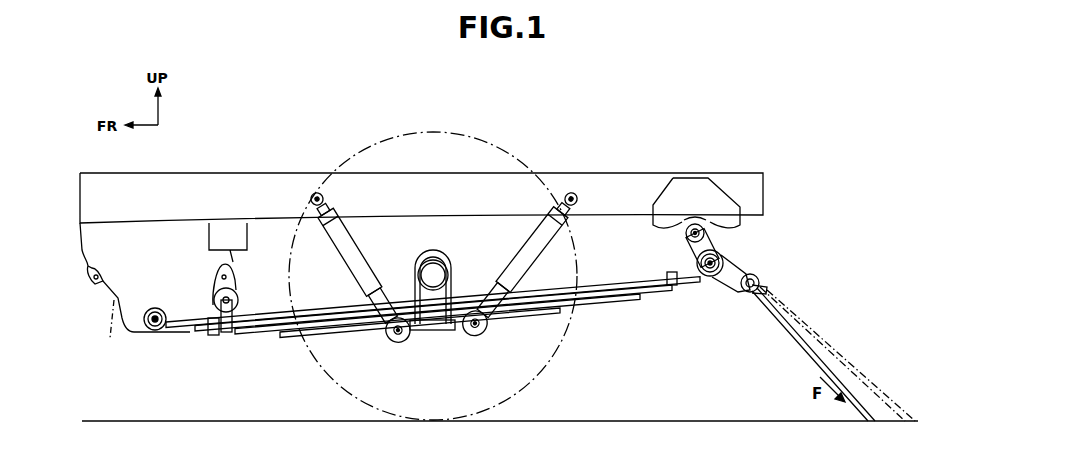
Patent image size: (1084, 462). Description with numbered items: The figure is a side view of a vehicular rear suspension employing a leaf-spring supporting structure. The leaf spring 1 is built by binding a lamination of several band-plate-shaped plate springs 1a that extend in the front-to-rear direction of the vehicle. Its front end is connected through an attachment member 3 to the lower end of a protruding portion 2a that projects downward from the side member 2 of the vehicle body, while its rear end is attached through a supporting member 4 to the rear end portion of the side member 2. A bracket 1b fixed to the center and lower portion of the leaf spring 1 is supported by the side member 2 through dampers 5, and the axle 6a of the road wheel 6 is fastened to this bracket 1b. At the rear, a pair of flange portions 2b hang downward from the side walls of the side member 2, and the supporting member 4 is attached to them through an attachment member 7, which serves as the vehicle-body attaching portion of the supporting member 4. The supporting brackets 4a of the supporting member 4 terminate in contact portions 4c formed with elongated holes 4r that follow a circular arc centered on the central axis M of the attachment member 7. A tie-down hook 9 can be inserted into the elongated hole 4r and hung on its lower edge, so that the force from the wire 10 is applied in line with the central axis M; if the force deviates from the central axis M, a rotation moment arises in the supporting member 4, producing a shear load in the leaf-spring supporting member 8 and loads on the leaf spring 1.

The leaf spring 1 is at (623, 301).
The plate springs 1a is at (275, 329).
The bracket 1b is at (440, 331).
The side member 2 is at (613, 173).
The protruding portion 2a is at (118, 297).
The flange portions 2b is at (681, 232).
The attachment member 3 is at (150, 332).
The supporting member 4 is at (755, 278).
The supporting brackets 4a is at (726, 288).
The elongated holes 4r is at (751, 275).
The contact portions 4c is at (760, 273).
The dampers 5 is at (347, 263).
The road wheel 6 is at (438, 131).
The axle 6a is at (433, 262).
The attachment member 7 is at (703, 223).
The leaf-spring supporting member 8 is at (720, 251).
The tie-down hook 9 is at (777, 291).
The wire 10 is at (812, 325).
The central axis M is at (692, 256).